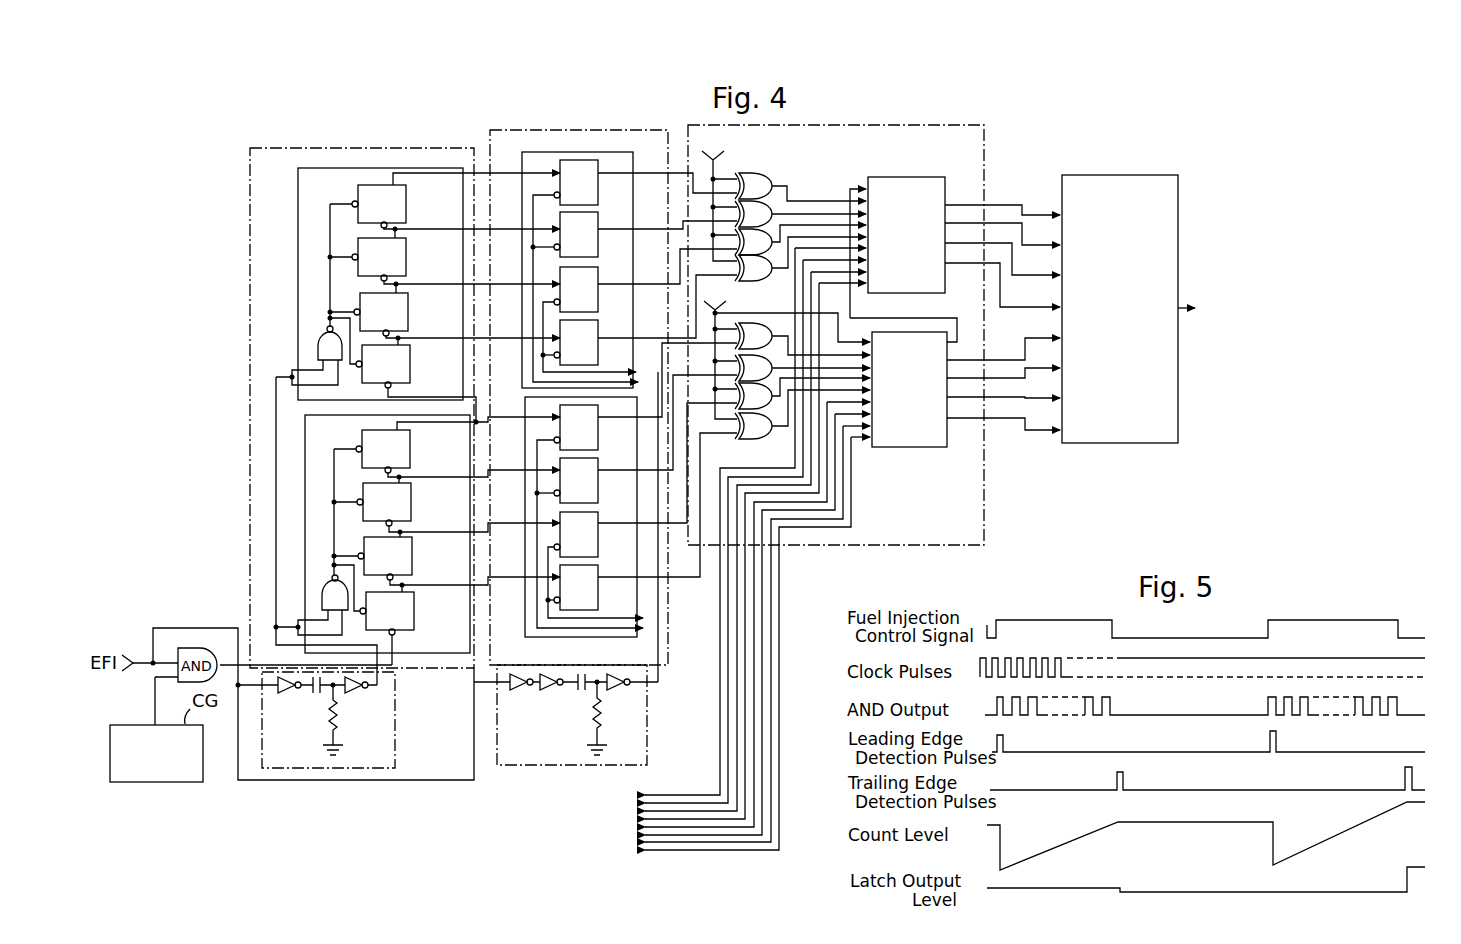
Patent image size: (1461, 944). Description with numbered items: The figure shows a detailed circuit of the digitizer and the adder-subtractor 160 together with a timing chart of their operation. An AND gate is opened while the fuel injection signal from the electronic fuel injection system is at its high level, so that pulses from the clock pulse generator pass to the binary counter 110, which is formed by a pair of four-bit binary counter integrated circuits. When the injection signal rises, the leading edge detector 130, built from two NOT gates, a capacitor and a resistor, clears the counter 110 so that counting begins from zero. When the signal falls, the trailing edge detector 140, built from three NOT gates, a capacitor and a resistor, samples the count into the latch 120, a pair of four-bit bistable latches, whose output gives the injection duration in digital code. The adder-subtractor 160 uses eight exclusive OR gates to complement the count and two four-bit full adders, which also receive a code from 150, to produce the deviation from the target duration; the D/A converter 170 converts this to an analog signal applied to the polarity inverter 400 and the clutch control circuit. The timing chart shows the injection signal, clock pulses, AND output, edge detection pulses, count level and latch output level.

The binary counter 110 is at (340, 147).
The latch 120 is at (490, 130).
The leading edge detector 130 is at (395, 747).
The trailing edge detector 140 is at (647, 747).
The input signal source 150 is at (686, 549).
The adder-subtractor 160 is at (986, 146).
The D/A converter 170 is at (1130, 175).
The polarity inverter 400 is at (1248, 309).